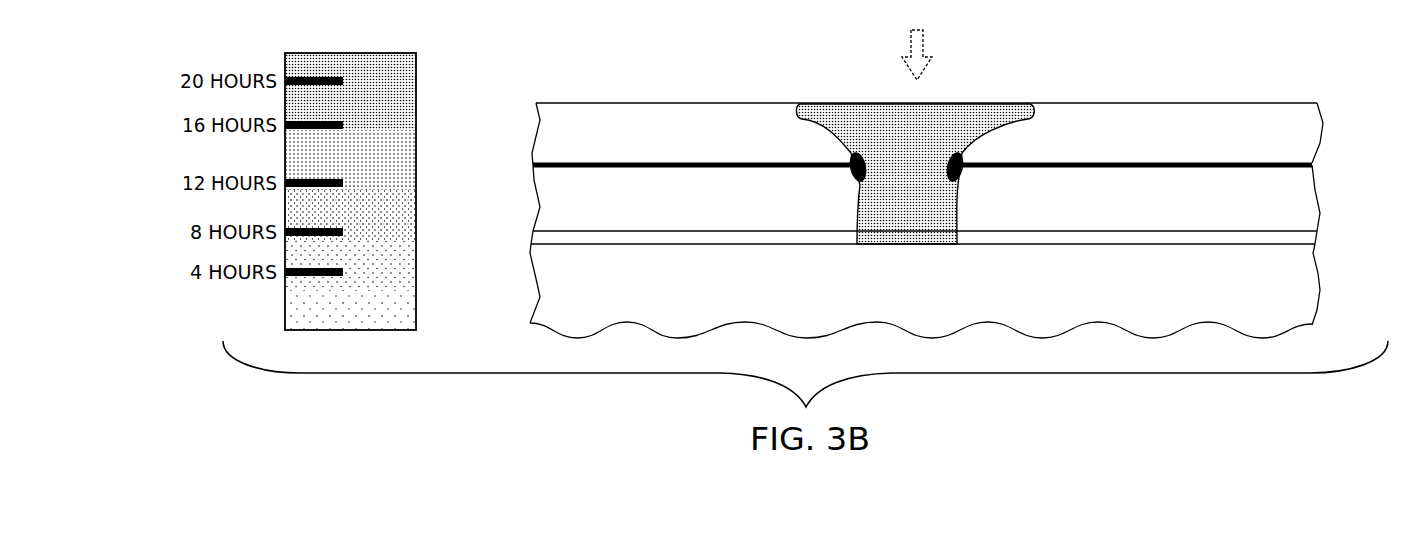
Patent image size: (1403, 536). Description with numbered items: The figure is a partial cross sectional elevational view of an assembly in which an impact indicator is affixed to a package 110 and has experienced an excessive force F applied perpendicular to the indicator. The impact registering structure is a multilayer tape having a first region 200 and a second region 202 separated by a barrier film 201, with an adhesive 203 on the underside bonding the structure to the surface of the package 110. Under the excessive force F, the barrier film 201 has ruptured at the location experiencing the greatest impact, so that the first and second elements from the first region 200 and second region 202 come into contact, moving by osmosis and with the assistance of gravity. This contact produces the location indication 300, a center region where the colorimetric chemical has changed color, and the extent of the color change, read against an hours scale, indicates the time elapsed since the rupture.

The package 110 is at (1320, 288).
The first region 200 is at (1321, 129).
The barrier film 201 is at (1316, 162).
The second region 202 is at (1321, 193).
The adhesive 203 is at (1320, 235).
The location indication 300 is at (914, 114).
The excessive force F is at (923, 38).